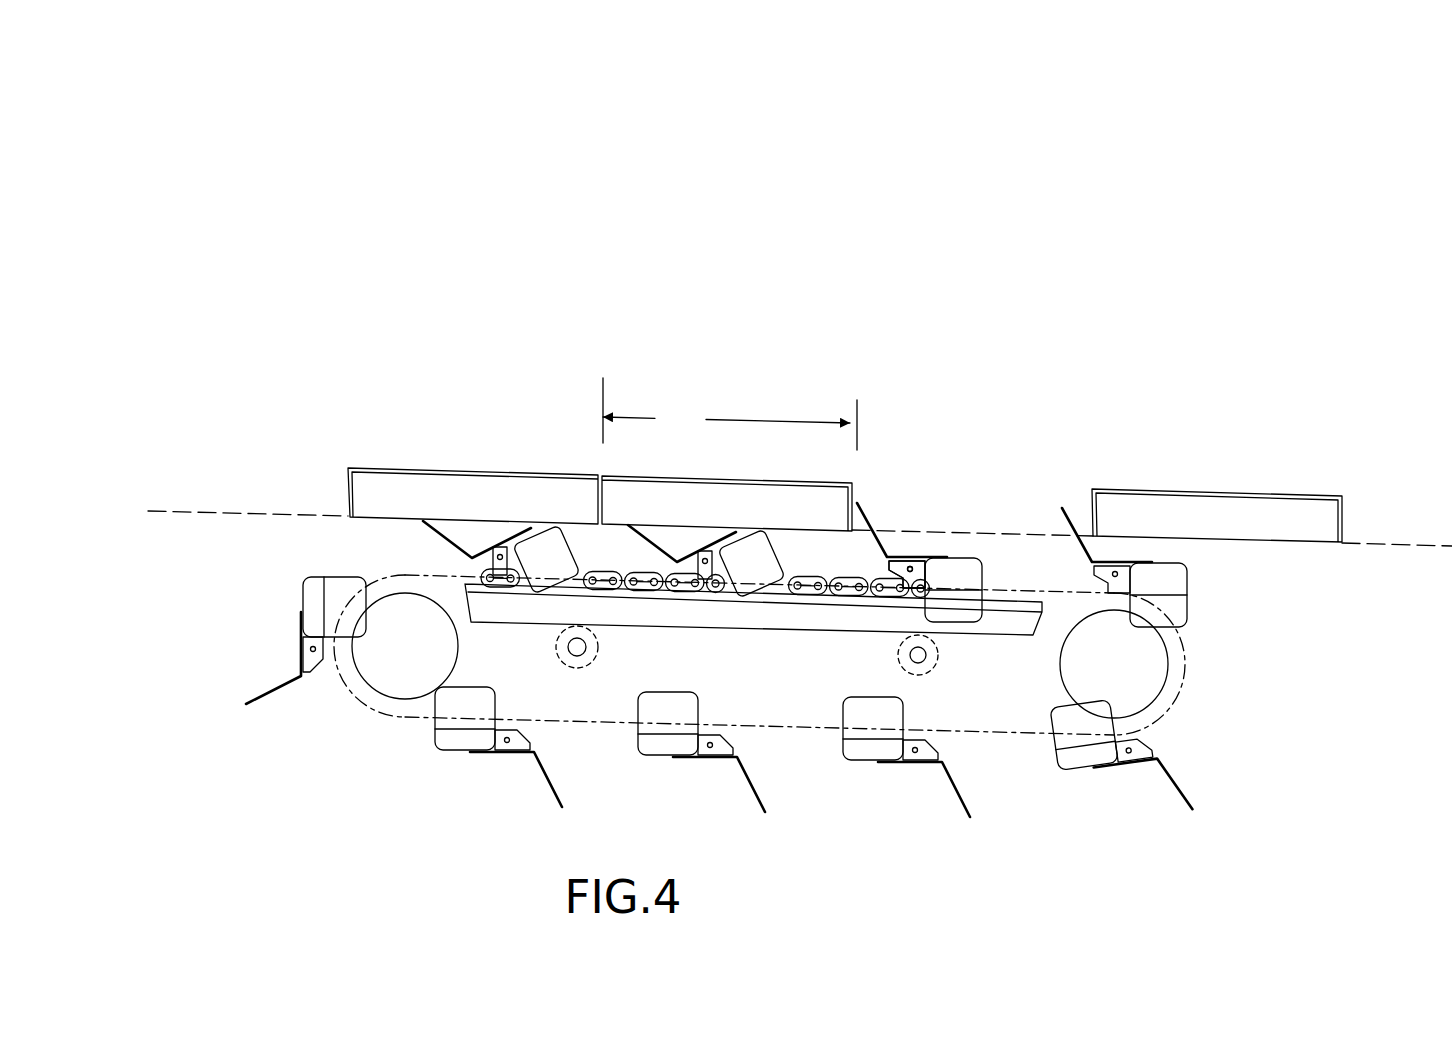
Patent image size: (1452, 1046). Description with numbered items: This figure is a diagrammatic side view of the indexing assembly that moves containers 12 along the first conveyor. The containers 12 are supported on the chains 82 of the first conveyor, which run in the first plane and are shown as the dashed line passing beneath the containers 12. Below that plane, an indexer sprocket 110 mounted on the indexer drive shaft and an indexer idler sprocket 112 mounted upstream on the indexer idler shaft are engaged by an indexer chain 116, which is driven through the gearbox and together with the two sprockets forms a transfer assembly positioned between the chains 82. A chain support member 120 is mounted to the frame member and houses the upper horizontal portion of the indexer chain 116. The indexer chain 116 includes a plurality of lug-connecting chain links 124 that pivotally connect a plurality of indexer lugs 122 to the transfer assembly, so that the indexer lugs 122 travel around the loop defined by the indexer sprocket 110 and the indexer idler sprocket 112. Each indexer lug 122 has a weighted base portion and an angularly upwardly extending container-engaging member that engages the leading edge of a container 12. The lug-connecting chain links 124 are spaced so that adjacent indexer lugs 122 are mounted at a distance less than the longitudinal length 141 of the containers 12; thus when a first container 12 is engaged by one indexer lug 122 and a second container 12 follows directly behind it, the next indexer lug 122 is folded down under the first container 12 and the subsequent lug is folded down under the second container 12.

The containers 12 is at (1232, 490).
The chains 82 is at (280, 515).
The indexer sprocket 110 is at (1155, 683).
The indexer idler sprocket 112 is at (387, 663).
The indexer chain 116 is at (829, 578).
The chain support member 120 is at (748, 635).
The indexer lugs 122 is at (657, 755).
The lug-connecting chain links 124 is at (913, 565).
The longitudinal length 141 is at (730, 414).